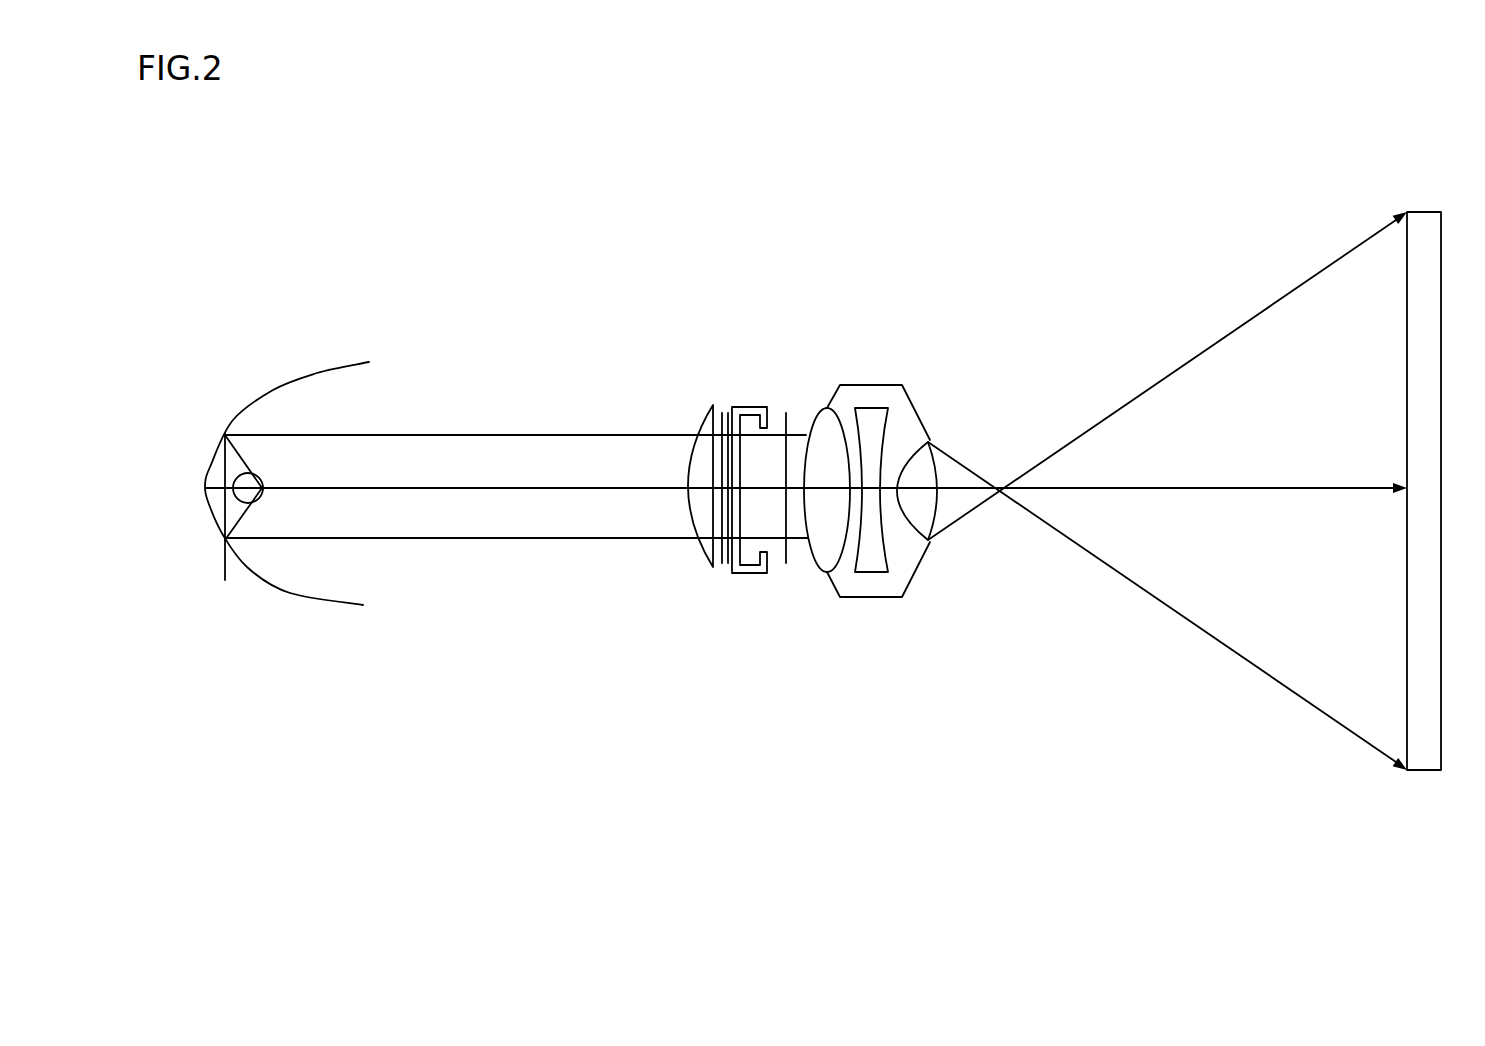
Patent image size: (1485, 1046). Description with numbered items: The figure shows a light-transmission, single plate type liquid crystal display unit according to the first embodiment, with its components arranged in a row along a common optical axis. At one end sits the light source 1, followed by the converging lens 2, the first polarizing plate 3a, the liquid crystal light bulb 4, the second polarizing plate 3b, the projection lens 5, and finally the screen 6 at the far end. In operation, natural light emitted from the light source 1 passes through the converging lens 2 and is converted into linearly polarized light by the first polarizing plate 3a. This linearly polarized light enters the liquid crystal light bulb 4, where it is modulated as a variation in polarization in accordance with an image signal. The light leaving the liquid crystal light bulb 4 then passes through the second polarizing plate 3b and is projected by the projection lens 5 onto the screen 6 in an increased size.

The light source 1 is at (255, 572).
The converging lens 2 is at (703, 548).
The first polarizing plate 3a is at (723, 570).
The second polarizing plate 3b is at (793, 553).
The liquid crystal light bulb 4 is at (752, 405).
The projection lens 5 is at (913, 572).
The screen 6 is at (1407, 561).